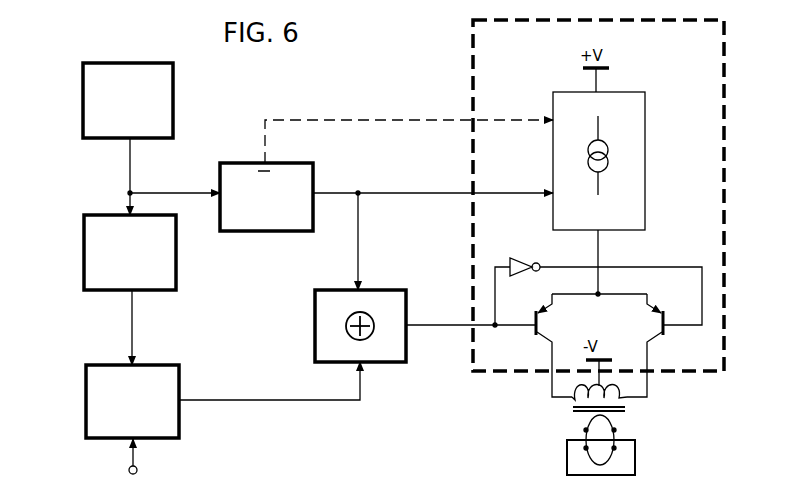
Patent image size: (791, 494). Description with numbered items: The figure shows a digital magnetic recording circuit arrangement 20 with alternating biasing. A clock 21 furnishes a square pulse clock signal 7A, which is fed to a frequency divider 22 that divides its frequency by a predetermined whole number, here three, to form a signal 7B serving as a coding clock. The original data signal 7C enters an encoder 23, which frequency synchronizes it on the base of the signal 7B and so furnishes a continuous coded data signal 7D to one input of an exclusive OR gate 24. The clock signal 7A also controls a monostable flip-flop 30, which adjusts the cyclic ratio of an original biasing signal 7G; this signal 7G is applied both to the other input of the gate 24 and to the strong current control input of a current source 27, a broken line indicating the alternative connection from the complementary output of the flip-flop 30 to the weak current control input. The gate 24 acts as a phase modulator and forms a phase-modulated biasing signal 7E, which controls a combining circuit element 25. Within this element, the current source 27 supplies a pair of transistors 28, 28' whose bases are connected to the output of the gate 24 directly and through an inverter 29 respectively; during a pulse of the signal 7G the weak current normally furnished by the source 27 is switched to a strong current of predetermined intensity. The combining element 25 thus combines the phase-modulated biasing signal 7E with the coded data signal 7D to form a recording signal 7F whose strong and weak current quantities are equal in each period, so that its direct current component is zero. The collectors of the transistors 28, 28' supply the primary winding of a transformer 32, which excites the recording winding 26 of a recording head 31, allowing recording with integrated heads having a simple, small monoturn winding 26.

The digital magnetic reading circuit arrangement 20 is at (350, 92).
The clock 21 is at (83, 88).
The frequency divider 22 is at (84, 240).
The encoder 23 is at (86, 390).
The exclusive OR gate 24 is at (352, 290).
The combining circuit element 25 is at (522, 22).
The recording winding 26 is at (565, 451).
The current source 27 is at (645, 132).
The transistor 28 is at (545, 345).
The transistor 28' is at (660, 345).
The inverter 29 is at (533, 246).
The monostable flip-flop 30 is at (262, 231).
The recording head 31 is at (635, 456).
The transformer 32 is at (553, 404).
The clock signal 7A is at (160, 176).
The divided clock signal 7B is at (116, 327).
The original data signal 7C is at (132, 466).
The coded data signal 7D is at (269, 381).
The phase-modulated biasing signal 7E is at (470, 314).
The recording signal 7F is at (616, 404).
The original biasing signal 7G is at (433, 240).